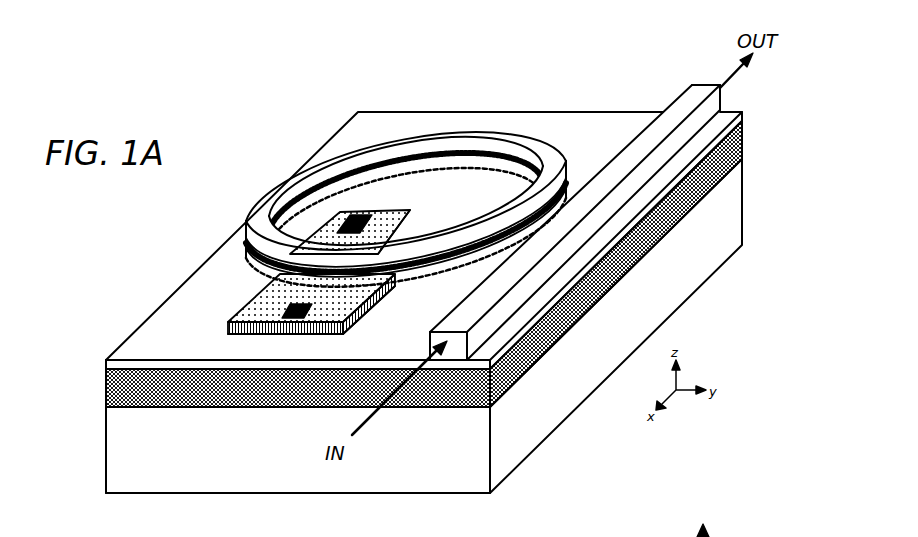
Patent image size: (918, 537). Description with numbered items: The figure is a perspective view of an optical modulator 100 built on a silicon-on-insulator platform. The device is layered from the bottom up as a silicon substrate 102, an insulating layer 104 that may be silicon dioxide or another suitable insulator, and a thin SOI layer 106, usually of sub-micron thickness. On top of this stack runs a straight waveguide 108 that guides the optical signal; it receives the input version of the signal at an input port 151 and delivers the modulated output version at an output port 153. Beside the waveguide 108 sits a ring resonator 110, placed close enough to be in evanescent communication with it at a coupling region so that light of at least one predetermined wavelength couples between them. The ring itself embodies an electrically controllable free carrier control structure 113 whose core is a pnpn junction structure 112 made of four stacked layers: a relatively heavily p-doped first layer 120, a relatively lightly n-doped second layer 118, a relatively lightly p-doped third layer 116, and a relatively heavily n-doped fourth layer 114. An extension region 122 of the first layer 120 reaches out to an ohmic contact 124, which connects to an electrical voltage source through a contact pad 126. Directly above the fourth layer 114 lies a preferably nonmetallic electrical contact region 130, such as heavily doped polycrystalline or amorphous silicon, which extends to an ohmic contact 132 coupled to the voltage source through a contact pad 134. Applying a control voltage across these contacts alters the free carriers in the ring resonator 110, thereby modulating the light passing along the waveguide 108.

The optical modulator 100 is at (228, 78).
The silicon substrate 102 is at (104, 452).
The insulating layer 104 is at (104, 389).
The SOI layer 106 is at (104, 366).
The waveguide 108 is at (615, 172).
The ring resonator 110 is at (306, 173).
The pnpn junction structure 112 is at (306, 239).
The free carrier control structure 113 is at (353, 203).
The fourth layer 114 is at (283, 250).
The third layer 116 is at (283, 263).
The second layer 118 is at (283, 275).
The first layer 120 is at (280, 289).
The extension region 122 is at (273, 287).
The ohmic contact 124 is at (240, 318).
The contact pad 126 is at (243, 338).
The electrical contact region 130 is at (380, 248).
The ohmic contact 132 is at (362, 224).
The contact pad 134 is at (372, 242).
The input port 151 is at (430, 341).
The output port 153 is at (706, 85).